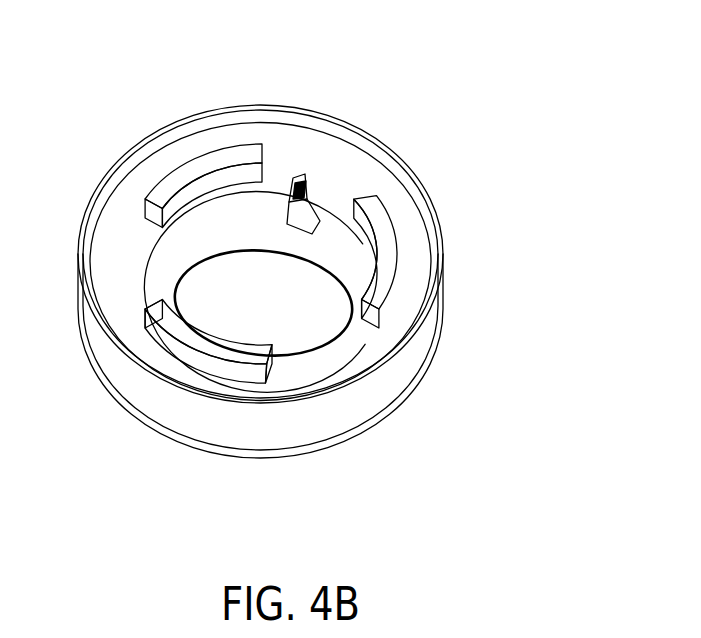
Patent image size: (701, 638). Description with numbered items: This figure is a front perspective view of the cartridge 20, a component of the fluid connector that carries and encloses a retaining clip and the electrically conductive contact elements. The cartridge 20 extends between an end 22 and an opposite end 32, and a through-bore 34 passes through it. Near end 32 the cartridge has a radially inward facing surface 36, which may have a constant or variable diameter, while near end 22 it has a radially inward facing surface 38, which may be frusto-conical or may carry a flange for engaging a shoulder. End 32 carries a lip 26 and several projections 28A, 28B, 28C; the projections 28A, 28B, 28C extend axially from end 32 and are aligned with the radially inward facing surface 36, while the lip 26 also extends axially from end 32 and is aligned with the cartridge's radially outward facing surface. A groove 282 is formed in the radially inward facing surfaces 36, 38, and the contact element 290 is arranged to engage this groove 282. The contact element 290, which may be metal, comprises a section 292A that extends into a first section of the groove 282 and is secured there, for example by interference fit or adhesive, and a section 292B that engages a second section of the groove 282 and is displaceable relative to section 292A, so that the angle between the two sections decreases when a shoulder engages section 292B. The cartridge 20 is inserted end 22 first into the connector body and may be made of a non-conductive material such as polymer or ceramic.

The cartridge 20 is at (570, 84).
The end 22 is at (287, 457).
The lip 26 is at (340, 392).
The projection 28A is at (173, 347).
The projection 28B is at (183, 180).
The projection 28C is at (388, 306).
The end 32 is at (358, 367).
The through-bore 34 is at (196, 310).
The radially inward facing surface 36 is at (207, 187).
The radially inward facing surface 38 is at (180, 253).
The groove 282 is at (319, 266).
The contact element 290 is at (310, 256).
The section 292A is at (312, 231).
The section 292B is at (318, 243).